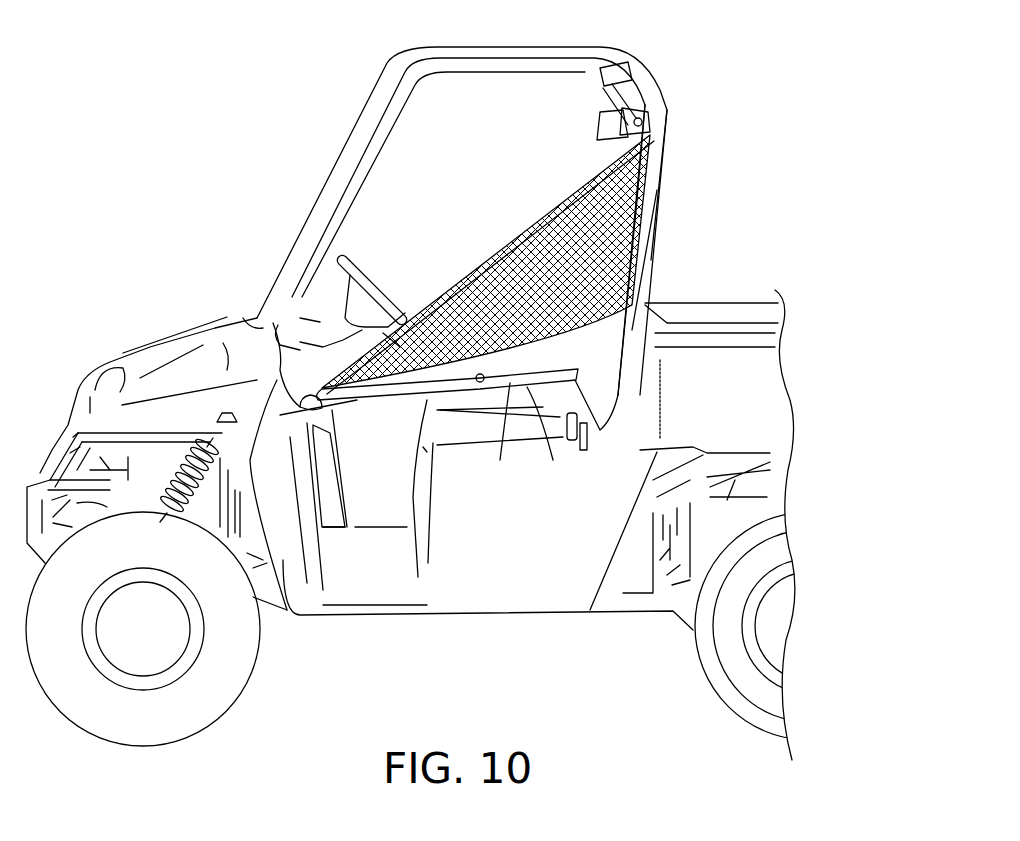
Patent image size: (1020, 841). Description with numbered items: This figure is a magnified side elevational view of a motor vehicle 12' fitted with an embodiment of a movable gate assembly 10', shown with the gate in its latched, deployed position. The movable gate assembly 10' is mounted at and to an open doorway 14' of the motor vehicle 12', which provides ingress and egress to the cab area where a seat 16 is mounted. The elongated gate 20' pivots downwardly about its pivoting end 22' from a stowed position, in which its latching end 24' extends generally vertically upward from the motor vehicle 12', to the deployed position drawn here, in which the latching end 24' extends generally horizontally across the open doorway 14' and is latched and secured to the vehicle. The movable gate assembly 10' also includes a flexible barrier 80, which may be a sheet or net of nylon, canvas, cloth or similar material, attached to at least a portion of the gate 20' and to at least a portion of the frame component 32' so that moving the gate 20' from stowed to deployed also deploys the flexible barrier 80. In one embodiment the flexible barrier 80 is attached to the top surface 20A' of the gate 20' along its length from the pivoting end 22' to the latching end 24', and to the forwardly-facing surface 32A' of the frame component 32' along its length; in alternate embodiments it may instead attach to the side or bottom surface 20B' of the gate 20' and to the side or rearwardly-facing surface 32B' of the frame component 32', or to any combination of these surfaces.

The movable gate assembly 10' is at (474, 506).
The motor vehicle 12' is at (502, 234).
The open doorway 14' is at (440, 184).
The seat 16 is at (490, 438).
The gate 20' is at (501, 436).
The top surface of the gate 20A' is at (416, 431).
The side or bottom surface of the gate 20B' is at (551, 438).
The pivoting end 22' is at (447, 372).
The latching end 24' is at (276, 400).
The frame component 32' is at (683, 185).
The forwardly-facing surface of the frame component 32A' is at (686, 152).
The side or rearwardly-facing surface of the frame component 32B' is at (675, 297).
The flexible barrier 80 is at (548, 216).